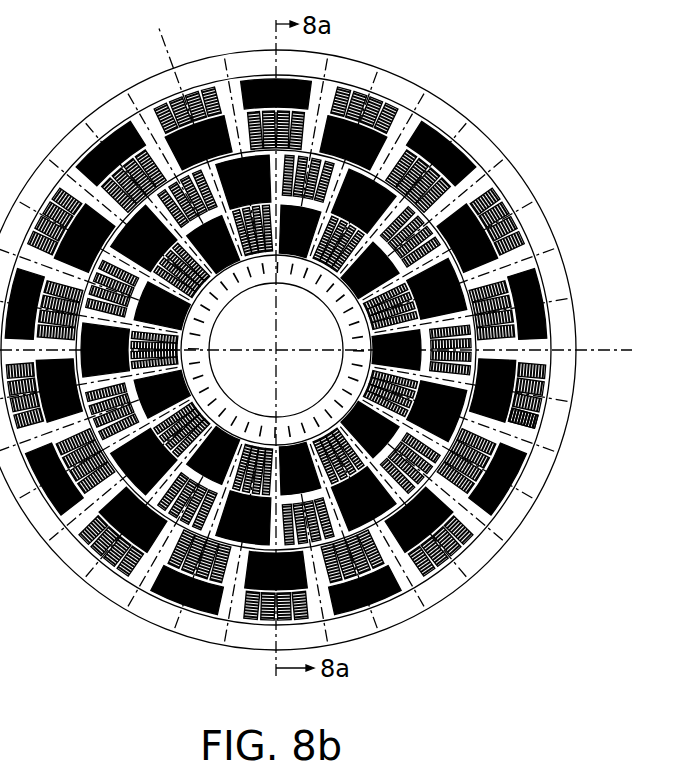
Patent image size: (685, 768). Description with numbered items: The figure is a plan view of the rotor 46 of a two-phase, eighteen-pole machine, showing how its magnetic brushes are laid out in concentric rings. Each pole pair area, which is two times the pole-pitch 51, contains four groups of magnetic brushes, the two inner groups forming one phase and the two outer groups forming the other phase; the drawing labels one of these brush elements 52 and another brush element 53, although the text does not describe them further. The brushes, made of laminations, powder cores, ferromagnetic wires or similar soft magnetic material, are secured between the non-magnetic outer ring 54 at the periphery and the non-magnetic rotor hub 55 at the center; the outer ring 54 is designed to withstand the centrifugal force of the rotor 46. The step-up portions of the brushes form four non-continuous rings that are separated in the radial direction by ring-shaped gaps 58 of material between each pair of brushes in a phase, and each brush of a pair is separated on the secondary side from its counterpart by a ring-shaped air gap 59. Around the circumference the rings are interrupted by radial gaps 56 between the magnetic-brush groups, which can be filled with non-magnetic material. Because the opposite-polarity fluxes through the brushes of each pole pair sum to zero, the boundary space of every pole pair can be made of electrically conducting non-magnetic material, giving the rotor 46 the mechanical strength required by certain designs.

The rotor 46 is at (504, 112).
The pole-pitch 51 is at (272, 36).
The stator permanent magnet 52 is at (441, 135).
The rotor permanent magnet 53 is at (460, 277).
The outer ring 54 is at (537, 470).
The rotor hub 55 is at (547, 391).
The radial gaps 56 is at (412, 563).
The ring-shaped gaps 58 is at (333, 403).
The ring-shaped air gap 59 is at (542, 408).